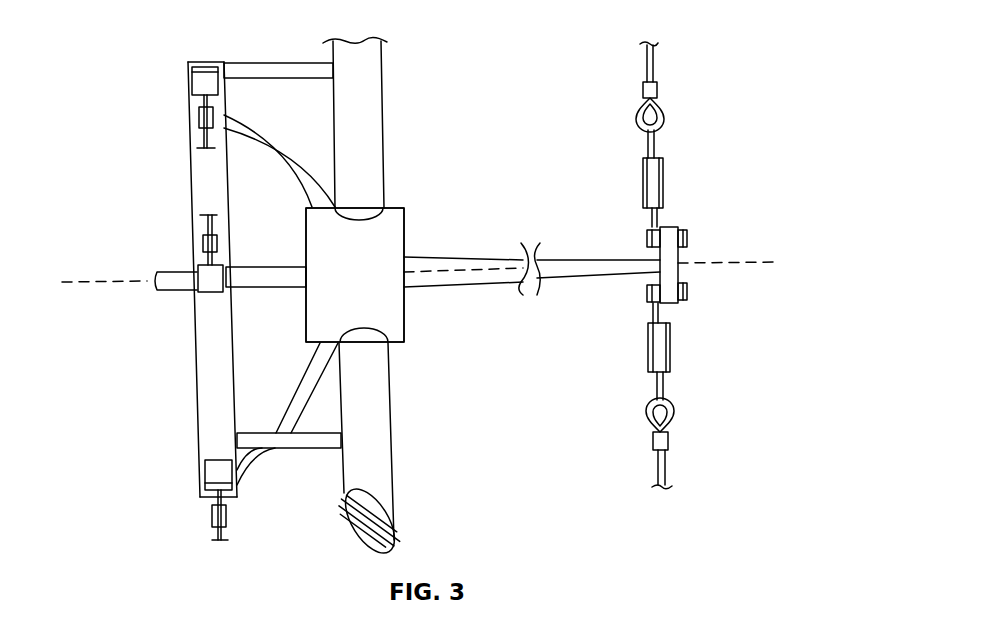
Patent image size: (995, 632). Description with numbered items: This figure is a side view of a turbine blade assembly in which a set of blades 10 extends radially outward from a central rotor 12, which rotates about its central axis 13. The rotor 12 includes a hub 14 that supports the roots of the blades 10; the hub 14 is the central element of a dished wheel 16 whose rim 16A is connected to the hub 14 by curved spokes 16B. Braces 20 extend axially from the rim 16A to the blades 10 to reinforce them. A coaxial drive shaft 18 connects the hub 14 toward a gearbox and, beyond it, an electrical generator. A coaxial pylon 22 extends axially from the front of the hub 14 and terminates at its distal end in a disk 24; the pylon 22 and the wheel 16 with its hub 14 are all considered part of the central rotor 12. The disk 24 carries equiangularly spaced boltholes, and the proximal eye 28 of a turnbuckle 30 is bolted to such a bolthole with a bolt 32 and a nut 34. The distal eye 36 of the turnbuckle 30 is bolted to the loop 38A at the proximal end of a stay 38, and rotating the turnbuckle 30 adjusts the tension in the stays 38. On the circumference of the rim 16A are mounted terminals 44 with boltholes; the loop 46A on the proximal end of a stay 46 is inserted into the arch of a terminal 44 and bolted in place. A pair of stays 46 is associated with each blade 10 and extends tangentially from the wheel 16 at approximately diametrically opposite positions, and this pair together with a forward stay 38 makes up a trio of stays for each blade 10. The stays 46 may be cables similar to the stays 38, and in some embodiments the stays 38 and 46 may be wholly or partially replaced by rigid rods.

The blade 10 is at (383, 133).
The central rotor 12 is at (413, 232).
The central axis 13 is at (100, 282).
The hub 14 is at (407, 312).
The dished wheel 16 is at (227, 256).
The rim 16A is at (198, 423).
The curved spoke 16B is at (282, 147).
The coaxial drive shaft 18 is at (252, 267).
The brace 20 is at (277, 62).
The coaxial pylon 22 is at (480, 288).
The disk 24 is at (680, 260).
The proximal eye 28 is at (655, 215).
The turnbuckle 30 is at (643, 185).
The bolt 32 is at (687, 237).
The nut 34 is at (647, 238).
The distal eye 36 is at (655, 152).
The stay 38 is at (648, 62).
The loop 38A is at (664, 116).
The terminal 44 is at (202, 66).
The stay 46 is at (200, 138).
The loop 46A is at (195, 88).